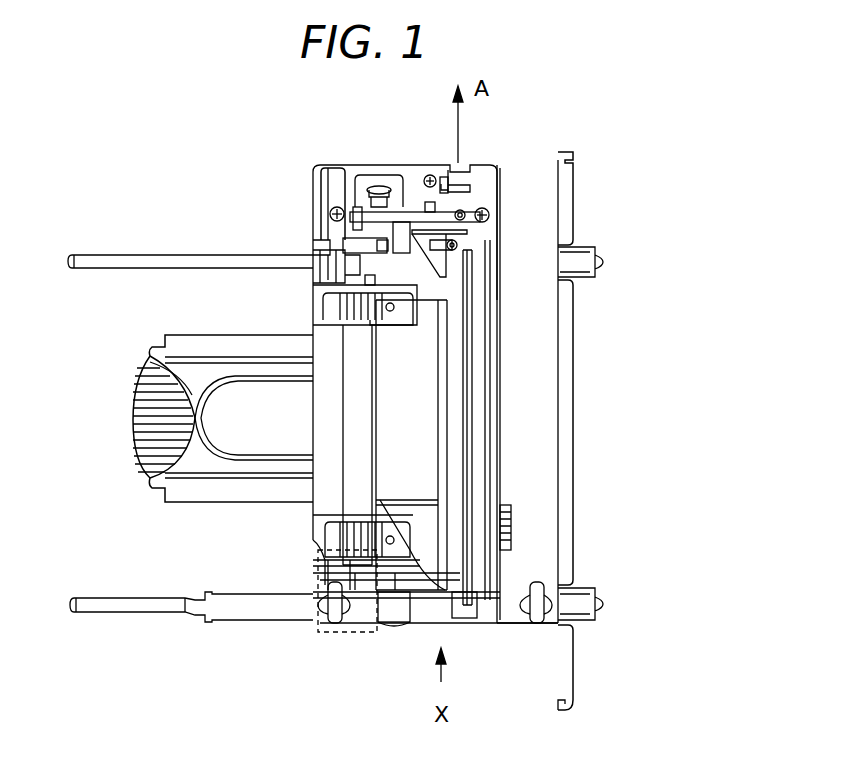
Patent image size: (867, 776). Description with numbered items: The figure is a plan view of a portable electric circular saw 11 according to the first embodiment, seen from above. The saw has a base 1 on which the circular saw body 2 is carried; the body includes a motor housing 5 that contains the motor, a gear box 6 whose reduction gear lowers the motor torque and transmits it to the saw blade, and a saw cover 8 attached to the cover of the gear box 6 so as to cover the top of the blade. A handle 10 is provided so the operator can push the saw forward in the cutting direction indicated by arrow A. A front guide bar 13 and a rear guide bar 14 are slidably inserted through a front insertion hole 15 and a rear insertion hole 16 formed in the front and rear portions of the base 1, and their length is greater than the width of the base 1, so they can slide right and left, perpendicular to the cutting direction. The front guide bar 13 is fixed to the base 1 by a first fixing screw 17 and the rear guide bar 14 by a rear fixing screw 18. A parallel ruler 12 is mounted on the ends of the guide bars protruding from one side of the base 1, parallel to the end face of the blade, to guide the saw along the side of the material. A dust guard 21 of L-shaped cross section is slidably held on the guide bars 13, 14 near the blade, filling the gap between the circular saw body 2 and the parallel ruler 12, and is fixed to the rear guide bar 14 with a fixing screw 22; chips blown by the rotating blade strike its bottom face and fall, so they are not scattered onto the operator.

The base 1 is at (405, 245).
The circular saw body 2 is at (216, 503).
The motor housing 5 is at (232, 341).
The gear box 6 is at (420, 430).
The saw cover 8 is at (478, 386).
The handle 10 is at (330, 496).
The portable electric circular saw 11 is at (658, 235).
The parallel ruler 12 is at (565, 200).
The front guide bar 13 is at (130, 257).
The rear guide bar 14 is at (128, 612).
The front insertion hole 15 is at (316, 246).
The rear insertion hole 16 is at (343, 627).
The first fixing screw 17 is at (310, 260).
The rear fixing screw 18 is at (318, 626).
The dust guard 21 is at (515, 162).
The fixing screw 22 is at (540, 620).